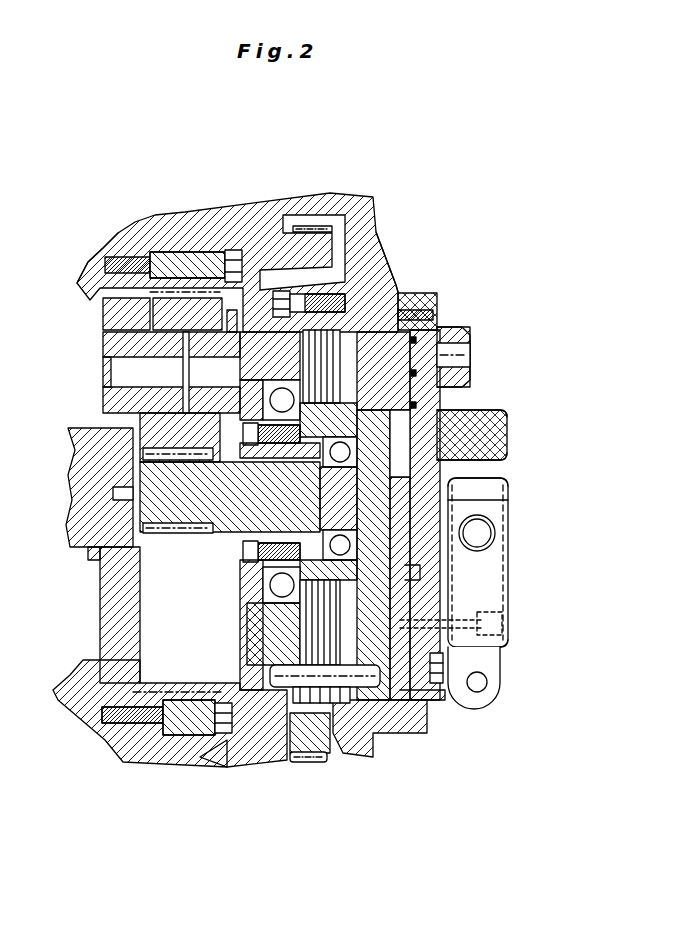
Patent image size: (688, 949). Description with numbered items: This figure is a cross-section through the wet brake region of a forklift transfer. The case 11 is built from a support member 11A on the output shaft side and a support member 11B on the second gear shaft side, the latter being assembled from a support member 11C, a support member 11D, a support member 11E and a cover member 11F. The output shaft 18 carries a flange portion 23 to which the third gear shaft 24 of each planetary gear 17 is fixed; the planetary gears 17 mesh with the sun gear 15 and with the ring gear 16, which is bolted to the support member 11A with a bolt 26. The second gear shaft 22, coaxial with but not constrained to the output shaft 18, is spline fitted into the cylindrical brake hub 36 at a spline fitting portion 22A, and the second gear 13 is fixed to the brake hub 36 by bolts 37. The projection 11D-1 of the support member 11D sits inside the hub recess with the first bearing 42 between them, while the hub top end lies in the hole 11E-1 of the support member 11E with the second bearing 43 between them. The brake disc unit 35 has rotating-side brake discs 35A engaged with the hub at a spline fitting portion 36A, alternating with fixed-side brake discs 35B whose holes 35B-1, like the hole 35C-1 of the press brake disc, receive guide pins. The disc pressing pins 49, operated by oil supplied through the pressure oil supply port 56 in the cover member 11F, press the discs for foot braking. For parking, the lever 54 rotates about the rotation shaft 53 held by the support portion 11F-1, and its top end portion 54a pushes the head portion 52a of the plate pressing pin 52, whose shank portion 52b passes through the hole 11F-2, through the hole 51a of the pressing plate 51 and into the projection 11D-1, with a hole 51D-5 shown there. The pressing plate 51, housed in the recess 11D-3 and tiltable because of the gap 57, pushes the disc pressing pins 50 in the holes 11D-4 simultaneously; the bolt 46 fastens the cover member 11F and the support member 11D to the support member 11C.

The case 11 is at (393, 190).
The support member 11A is at (118, 232).
The support member 11B is at (383, 214).
The support member 11C is at (367, 238).
The support member 11D is at (400, 297).
The projection 11D-1 is at (448, 660).
The recess 11D-3 is at (477, 687).
The holes 11D-4 is at (415, 370).
The support member 11E is at (257, 250).
The hole 11E-1 is at (183, 247).
The cover member 11F is at (405, 340).
The support portion 11F-1 is at (507, 623).
The hole 11F-2 is at (455, 501).
The second gear 13 is at (315, 762).
The sun gear 15 is at (110, 548).
The ring gear 16 is at (163, 247).
The planetary gears 17 is at (127, 433).
The output shaft 18 is at (88, 482).
The second gear shaft 22 is at (180, 505).
The spline fitting portion 22A is at (135, 573).
The flange portion 23 is at (100, 298).
The third gear shaft 24 is at (103, 397).
The bolt 26 is at (125, 750).
The brake disc unit 35 is at (352, 743).
The rotating-side brake discs 35A is at (270, 740).
The fixed-side brake discs 35B is at (290, 733).
The holes 35B-1 is at (285, 760).
The hole 35C-1 is at (373, 740).
The brake hub 36 is at (140, 630).
The spline fitting portion 36A is at (200, 760).
The bolts 37 is at (197, 557).
The first bearing 42 is at (173, 577).
The second bearing 43 is at (173, 717).
The bolt 46 is at (443, 687).
The disc pressing pins 49 is at (363, 345).
The disc pressing pins 50 is at (468, 330).
The pressing plate 51 is at (405, 553).
The hole 51a is at (495, 547).
The plate bracket 51D-5 is at (407, 567).
The plate pressing pin 52 is at (440, 467).
The head portion 52a is at (440, 460).
The shank portion 52b is at (440, 453).
The rotation shaft 53 is at (482, 530).
The lever 54 is at (500, 670).
The top end portion 54a is at (473, 485).
The pressure oil supply port 56 is at (462, 357).
The gap 57 is at (405, 535).